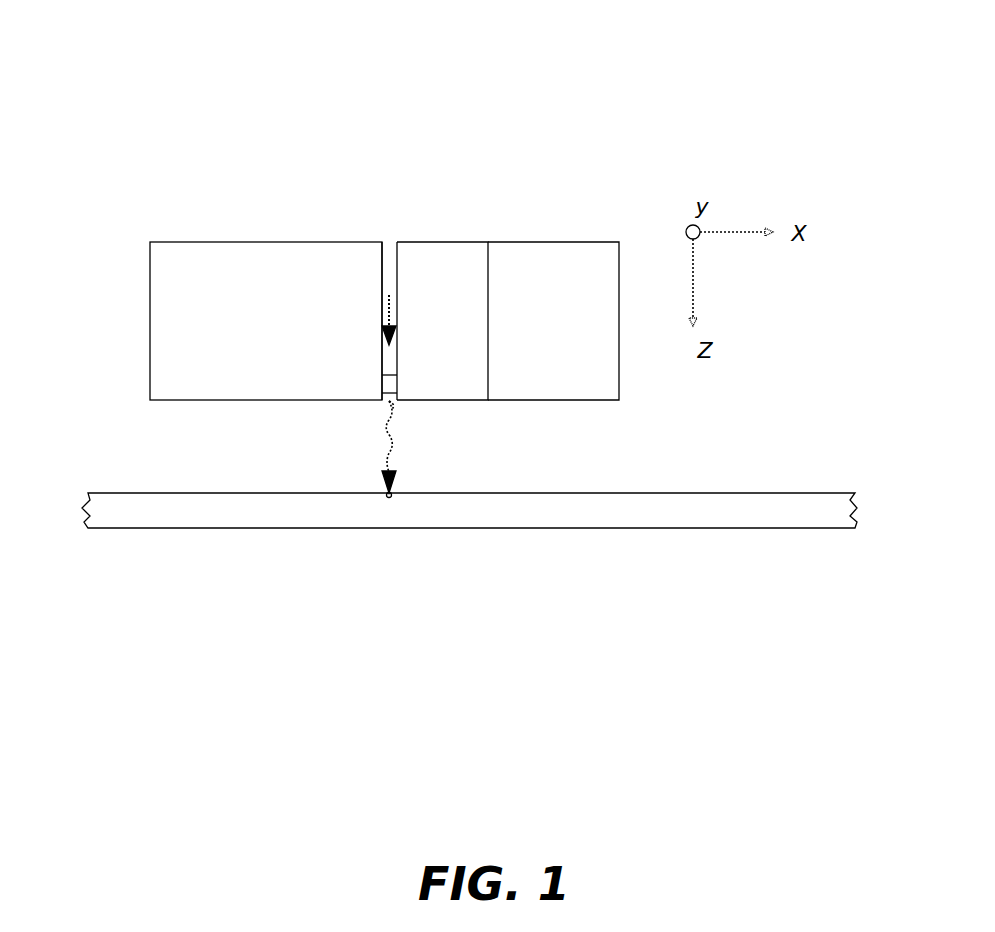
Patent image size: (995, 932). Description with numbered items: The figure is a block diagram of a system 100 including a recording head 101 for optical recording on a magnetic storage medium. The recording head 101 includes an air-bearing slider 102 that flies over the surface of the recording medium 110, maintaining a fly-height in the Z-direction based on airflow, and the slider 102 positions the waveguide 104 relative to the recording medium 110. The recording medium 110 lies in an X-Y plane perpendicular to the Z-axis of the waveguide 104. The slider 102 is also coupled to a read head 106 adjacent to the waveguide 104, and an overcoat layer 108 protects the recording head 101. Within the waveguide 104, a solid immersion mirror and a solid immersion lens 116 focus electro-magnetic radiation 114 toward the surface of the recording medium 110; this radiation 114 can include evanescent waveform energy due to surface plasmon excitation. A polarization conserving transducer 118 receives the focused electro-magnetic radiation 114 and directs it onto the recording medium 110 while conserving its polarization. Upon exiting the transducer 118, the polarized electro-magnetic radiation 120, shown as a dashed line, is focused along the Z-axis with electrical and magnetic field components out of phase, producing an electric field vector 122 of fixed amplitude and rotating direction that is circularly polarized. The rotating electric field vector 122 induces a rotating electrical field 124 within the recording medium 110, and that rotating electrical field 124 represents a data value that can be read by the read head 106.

The system 100 is at (152, 24).
The recording head 101 is at (118, 205).
The air-bearing slider 102 is at (150, 325).
The waveguide 104 is at (388, 242).
The read head 106 is at (458, 242).
The overcoat layer 108 is at (566, 242).
The recording medium 110 is at (130, 493).
The electro-magnetic radiation 114 is at (385, 312).
The solid immersion lens 116 is at (382, 378).
The polarization conserving transducer 118 is at (397, 399).
The polarized electro-magnetic radiation 120 is at (380, 446).
The electric field vector 122 is at (398, 426).
The rotating electrical field 124 is at (386, 498).